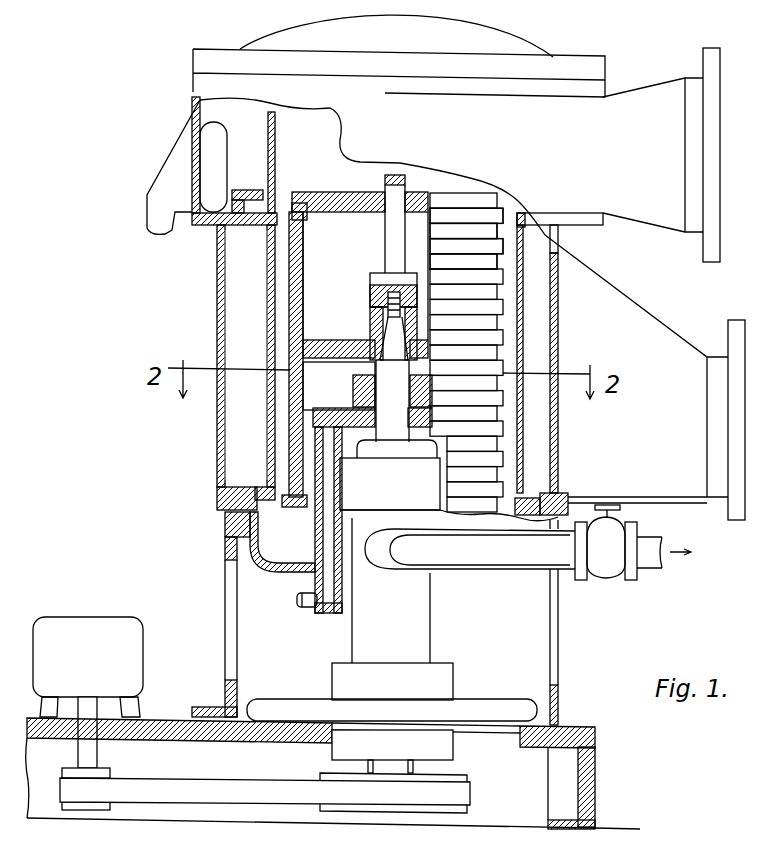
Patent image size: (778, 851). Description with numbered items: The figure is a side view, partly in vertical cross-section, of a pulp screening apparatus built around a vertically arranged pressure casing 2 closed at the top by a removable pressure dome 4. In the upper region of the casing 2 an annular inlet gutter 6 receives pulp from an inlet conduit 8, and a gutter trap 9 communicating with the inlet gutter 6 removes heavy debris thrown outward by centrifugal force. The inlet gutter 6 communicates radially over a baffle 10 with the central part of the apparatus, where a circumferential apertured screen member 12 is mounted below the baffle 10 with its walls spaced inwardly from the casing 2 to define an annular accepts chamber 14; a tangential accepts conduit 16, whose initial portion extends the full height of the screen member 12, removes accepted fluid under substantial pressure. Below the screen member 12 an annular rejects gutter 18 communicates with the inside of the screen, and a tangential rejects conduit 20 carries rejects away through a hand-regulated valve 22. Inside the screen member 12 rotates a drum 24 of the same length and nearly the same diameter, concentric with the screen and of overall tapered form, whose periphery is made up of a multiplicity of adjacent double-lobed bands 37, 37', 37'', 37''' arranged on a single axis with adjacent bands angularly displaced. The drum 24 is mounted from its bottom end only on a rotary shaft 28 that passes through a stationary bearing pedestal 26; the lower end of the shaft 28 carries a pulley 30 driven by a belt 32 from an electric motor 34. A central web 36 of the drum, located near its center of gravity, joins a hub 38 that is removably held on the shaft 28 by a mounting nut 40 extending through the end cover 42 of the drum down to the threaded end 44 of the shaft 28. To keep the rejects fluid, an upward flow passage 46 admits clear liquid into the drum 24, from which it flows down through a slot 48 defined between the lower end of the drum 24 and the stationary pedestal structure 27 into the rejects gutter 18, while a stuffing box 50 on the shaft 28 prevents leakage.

The pressure casing 2 is at (217, 455).
The pressure dome 4 is at (258, 47).
The inlet gutter 6 is at (217, 115).
The inlet conduit 8 is at (650, 97).
The gutter trap 9 is at (212, 160).
The baffle 10 is at (270, 133).
The screen member 12 is at (267, 300).
The accepts chamber 14 is at (235, 270).
The accepts conduit 16 is at (685, 360).
The rejects gutter 18 is at (273, 573).
The rejects conduit 20 is at (518, 553).
The valve 22 is at (612, 563).
The drum 24 is at (470, 250).
The bearing pedestal 26 is at (415, 643).
The stationary pedestal structure 27 is at (320, 535).
The rotary shaft 28 is at (402, 430).
The pulley 30 is at (468, 775).
The belt 32 is at (453, 800).
The electric motor 34 is at (112, 625).
The central web 36 is at (327, 345).
The band 37 is at (497, 182).
The band 37' is at (512, 208).
The band 37'' is at (527, 245).
The band 37''' is at (545, 270).
The hub 38 is at (378, 300).
The mounting nut 40 is at (397, 178).
The end cover 42 is at (328, 192).
The threaded end 44 is at (392, 293).
The upward flow passage 46 is at (323, 618).
The slot 48 is at (335, 495).
The stuffing box 50 is at (370, 395).